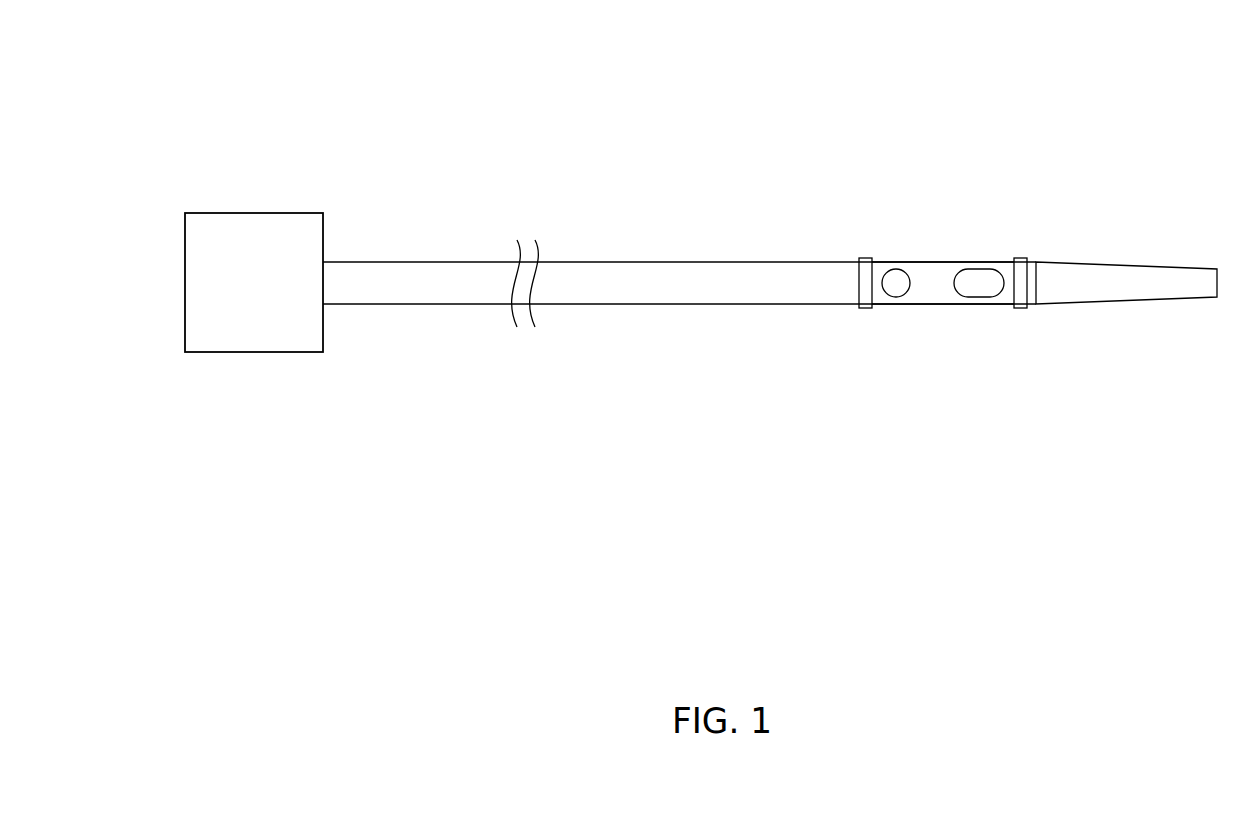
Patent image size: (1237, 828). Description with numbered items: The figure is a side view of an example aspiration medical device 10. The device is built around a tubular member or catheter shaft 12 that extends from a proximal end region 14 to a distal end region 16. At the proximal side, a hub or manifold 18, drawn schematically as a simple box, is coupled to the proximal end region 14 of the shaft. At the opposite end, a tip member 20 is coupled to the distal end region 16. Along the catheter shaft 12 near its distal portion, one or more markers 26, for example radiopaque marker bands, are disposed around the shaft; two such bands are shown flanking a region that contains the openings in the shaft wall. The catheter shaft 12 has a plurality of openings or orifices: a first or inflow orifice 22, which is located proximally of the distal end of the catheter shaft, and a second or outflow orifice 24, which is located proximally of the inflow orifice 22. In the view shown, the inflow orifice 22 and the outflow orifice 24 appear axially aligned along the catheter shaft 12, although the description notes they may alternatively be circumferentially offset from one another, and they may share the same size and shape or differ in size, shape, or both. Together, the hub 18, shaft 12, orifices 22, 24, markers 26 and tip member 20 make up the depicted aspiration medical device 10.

The aspiration medical device 10 is at (772, 64).
The catheter shaft 12 is at (618, 248).
The proximal end region 14 is at (424, 262).
The distal end region 16 is at (692, 304).
The hub 18 is at (253, 213).
The tip member 20 is at (1125, 262).
The inflow orifice 22 is at (978, 268).
The outflow orifice 24 is at (896, 268).
The markers 26 is at (865, 308).